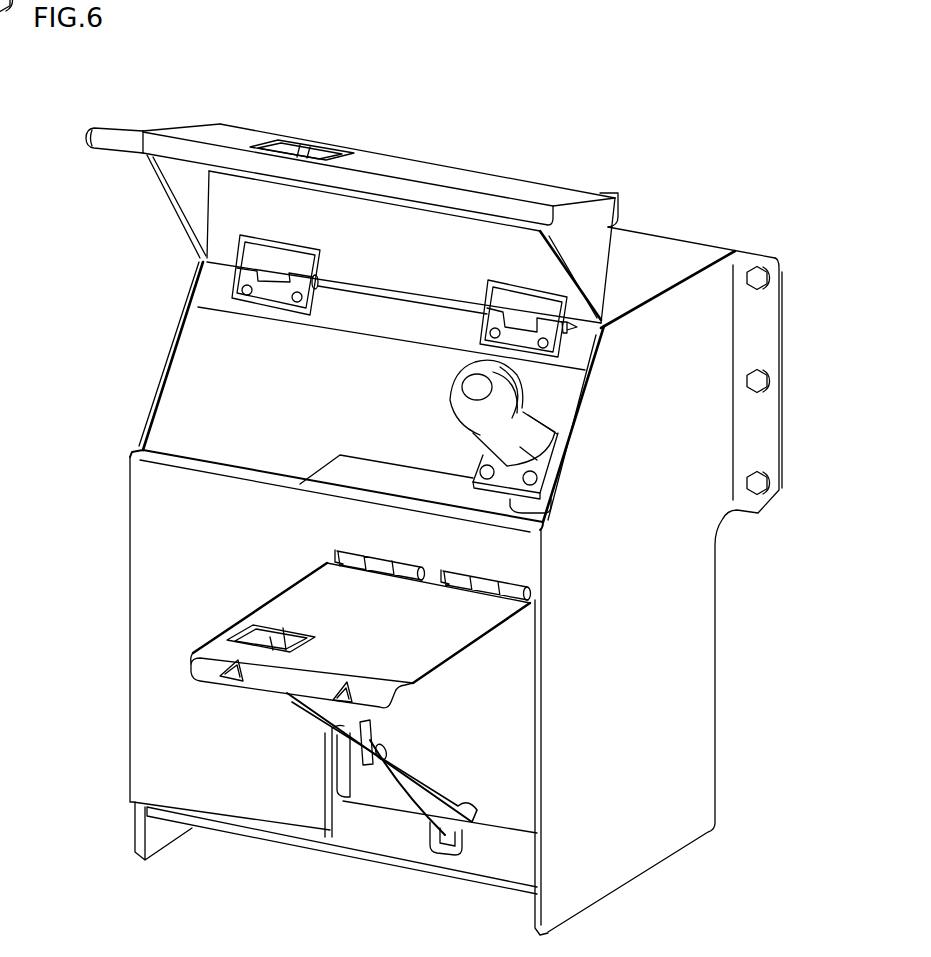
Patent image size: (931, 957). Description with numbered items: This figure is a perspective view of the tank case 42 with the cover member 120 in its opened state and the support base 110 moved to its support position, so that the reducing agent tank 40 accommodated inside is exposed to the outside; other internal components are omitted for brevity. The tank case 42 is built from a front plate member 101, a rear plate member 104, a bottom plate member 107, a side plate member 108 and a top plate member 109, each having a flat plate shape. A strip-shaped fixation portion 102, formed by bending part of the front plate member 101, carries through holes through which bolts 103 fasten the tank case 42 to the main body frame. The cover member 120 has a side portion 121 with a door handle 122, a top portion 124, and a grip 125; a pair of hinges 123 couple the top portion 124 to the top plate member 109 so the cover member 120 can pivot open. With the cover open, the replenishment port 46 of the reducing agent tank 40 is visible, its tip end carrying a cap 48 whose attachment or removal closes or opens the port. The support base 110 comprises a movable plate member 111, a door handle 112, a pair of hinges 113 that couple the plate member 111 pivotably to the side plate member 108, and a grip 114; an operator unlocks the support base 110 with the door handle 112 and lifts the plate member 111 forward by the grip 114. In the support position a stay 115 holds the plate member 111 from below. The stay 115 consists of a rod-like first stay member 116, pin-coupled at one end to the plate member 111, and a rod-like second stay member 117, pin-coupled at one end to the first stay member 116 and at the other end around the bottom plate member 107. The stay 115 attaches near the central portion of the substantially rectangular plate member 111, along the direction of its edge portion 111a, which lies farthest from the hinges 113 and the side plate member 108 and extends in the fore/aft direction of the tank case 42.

The tank case 42 is at (82, 97).
The reducing agent tank 40 is at (360, 473).
The replenishment port 46 is at (530, 458).
The cap 48 is at (507, 400).
The front plate member 101 is at (636, 836).
The fixation portion 102 is at (753, 323).
The bolts 103 is at (757, 287).
The rear plate member 104 is at (153, 833).
The bottom plate member 107 is at (244, 830).
The side plate member 108 is at (170, 728).
The top plate member 109 is at (655, 263).
The support base 110 is at (313, 728).
The plate member 111 is at (318, 604).
The edge portion 111a is at (200, 661).
The door handle 112 is at (261, 638).
The hinges 113 is at (378, 556).
The grip 114 is at (258, 689).
The stay 115 is at (417, 908).
The first stay member 116 is at (359, 776).
The second stay member 117 is at (418, 838).
The cover member 120 is at (184, 116).
The side portion 121 is at (460, 182).
The door handle 122 is at (282, 150).
The hinges 123 is at (260, 254).
The top portion 124 is at (623, 213).
The grip 125 is at (115, 140).